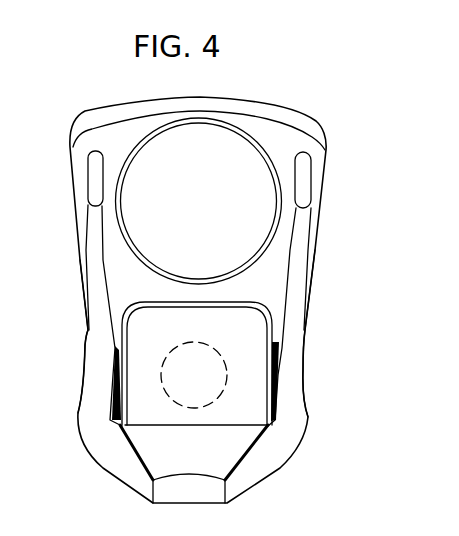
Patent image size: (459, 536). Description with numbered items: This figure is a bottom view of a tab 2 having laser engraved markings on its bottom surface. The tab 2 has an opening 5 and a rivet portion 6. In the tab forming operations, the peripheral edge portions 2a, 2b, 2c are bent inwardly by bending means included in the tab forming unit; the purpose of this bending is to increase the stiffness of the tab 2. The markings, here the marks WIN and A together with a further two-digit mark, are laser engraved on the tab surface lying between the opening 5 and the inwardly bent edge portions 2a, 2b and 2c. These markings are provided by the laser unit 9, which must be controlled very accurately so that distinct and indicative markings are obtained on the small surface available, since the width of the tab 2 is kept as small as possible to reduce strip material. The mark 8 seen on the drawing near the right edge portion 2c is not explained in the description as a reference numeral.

The holder body 2 is at (280, 108).
The top portion of holder 2a is at (87, 112).
The left side portion of holder 2b is at (88, 328).
The right side portion of holder 2c is at (305, 325).
The circular opening 5 is at (178, 278).
The button (hidden) 6 is at (228, 383).
The right slot 8 is at (294, 173).
The left slot 9 is at (107, 169).